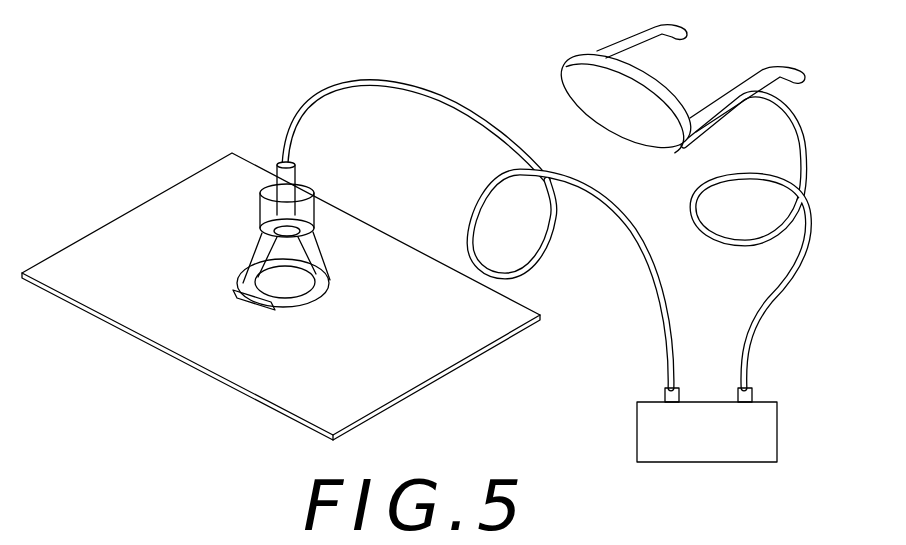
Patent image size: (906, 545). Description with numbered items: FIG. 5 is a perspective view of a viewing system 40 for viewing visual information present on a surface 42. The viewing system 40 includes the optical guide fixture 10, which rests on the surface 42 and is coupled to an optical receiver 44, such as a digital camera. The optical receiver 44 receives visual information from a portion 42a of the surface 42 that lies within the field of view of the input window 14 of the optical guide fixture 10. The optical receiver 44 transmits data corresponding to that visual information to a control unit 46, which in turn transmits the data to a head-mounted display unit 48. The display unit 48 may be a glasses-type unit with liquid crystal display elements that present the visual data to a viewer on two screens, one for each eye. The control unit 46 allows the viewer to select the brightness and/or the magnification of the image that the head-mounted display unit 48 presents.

The optical guide fixture 10 is at (343, 193).
The input window 14 is at (314, 305).
The viewing system 40 is at (350, 55).
The surface 42 is at (165, 212).
The portion of the surface 42a is at (297, 283).
The optical receiver 44 is at (292, 173).
The control unit 46 is at (637, 425).
The head-mounted display unit 48 is at (558, 70).